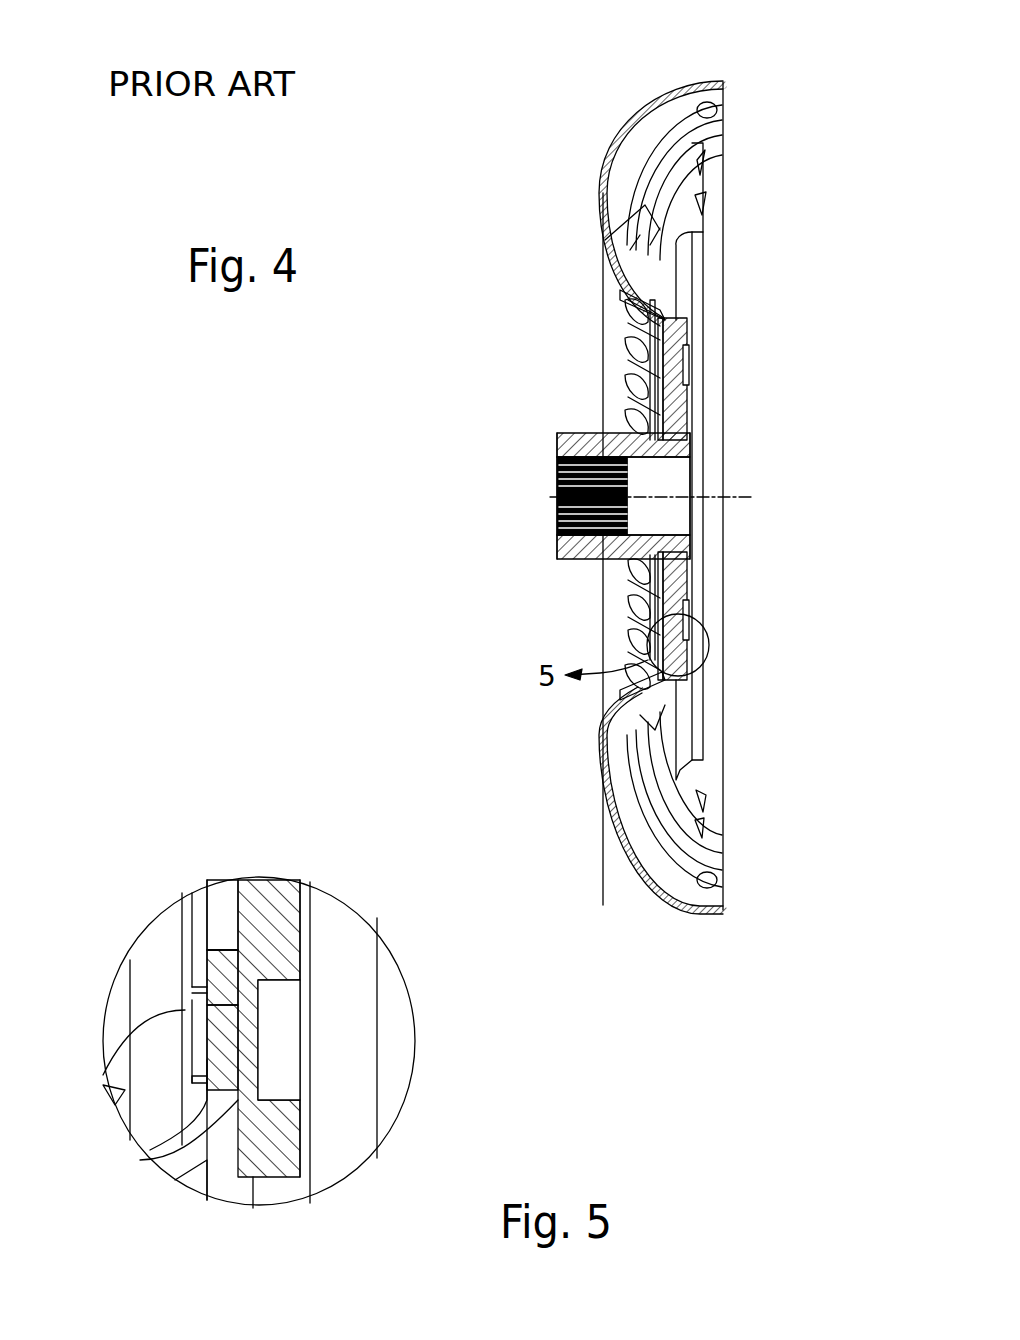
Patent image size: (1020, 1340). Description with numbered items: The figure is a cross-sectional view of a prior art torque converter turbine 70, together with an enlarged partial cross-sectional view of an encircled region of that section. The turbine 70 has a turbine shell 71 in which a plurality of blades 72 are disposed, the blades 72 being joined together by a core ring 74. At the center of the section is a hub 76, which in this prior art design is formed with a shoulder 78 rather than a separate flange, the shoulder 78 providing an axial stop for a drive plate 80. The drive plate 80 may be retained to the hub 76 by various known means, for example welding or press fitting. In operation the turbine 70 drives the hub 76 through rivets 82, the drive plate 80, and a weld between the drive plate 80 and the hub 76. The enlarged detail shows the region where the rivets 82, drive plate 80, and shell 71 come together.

In FIG. 4, the torque converter turbine 70 is at (754, 65).
In FIG. 4, the turbine shell 71 is at (603, 200).
In FIG. 5, the turbine shell 71 is at (160, 1150).
In FIG. 4, the blades 72 is at (722, 117).
In FIG. 4, the core ring 74 is at (700, 218).
In FIG. 4, the hub 76 is at (562, 557).
In FIG. 4, the shoulder 78 is at (680, 573).
In FIG. 4, the drive plate 80 is at (680, 420).
In FIG. 5, the drive plate 80 is at (264, 893).
In FIG. 4, the rivets 82 is at (665, 340).
In FIG. 5, the rivets 82 is at (205, 1045).